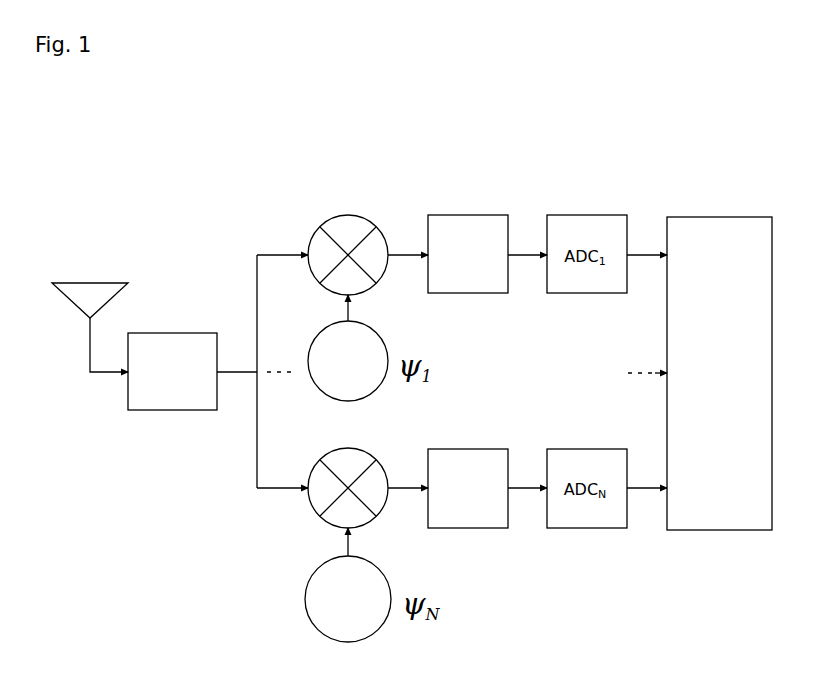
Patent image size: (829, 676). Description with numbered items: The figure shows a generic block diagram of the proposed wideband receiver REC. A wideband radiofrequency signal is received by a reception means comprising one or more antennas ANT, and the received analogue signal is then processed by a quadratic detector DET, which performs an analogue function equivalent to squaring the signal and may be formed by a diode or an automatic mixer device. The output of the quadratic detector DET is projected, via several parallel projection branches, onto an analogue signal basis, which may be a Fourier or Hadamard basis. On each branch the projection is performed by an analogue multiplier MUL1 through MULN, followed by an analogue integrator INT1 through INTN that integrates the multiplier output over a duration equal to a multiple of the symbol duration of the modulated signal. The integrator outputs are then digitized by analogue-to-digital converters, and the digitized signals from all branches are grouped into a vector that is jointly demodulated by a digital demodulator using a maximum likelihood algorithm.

The antenna ANT is at (90, 283).
The quadratic detector DET is at (177, 333).
The analogue multiplier MUL1 is at (328, 218).
The analogue multiplier MULN is at (310, 508).
The analogue integrator INT1 is at (470, 215).
The analogue integrator INTN is at (473, 528).
The wideband receiver REC is at (750, 217).